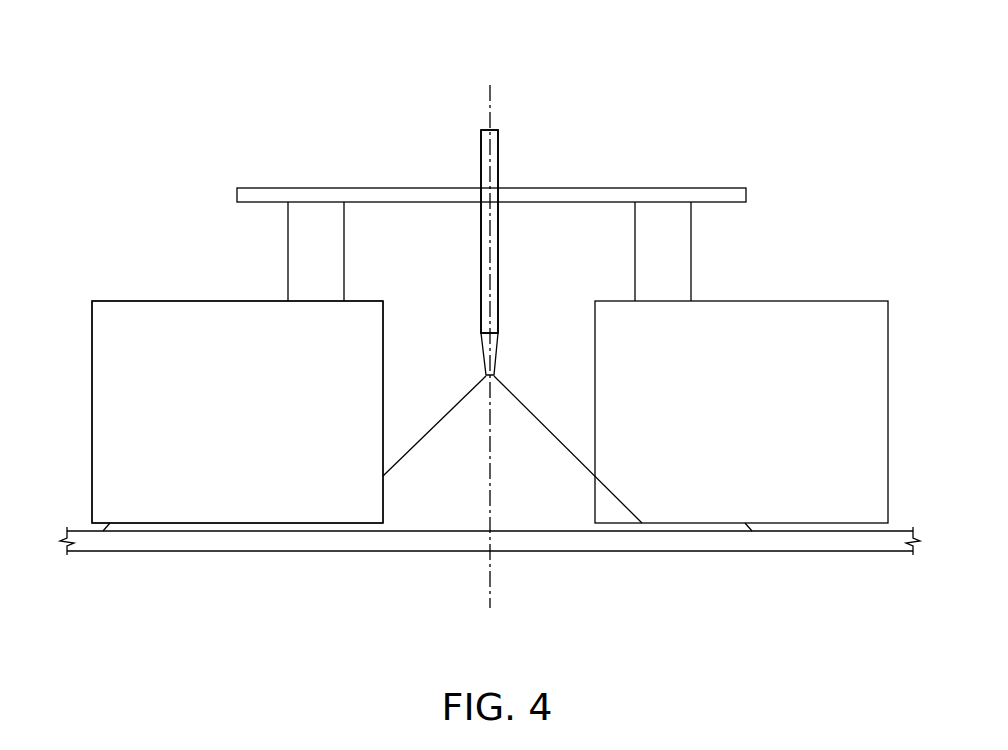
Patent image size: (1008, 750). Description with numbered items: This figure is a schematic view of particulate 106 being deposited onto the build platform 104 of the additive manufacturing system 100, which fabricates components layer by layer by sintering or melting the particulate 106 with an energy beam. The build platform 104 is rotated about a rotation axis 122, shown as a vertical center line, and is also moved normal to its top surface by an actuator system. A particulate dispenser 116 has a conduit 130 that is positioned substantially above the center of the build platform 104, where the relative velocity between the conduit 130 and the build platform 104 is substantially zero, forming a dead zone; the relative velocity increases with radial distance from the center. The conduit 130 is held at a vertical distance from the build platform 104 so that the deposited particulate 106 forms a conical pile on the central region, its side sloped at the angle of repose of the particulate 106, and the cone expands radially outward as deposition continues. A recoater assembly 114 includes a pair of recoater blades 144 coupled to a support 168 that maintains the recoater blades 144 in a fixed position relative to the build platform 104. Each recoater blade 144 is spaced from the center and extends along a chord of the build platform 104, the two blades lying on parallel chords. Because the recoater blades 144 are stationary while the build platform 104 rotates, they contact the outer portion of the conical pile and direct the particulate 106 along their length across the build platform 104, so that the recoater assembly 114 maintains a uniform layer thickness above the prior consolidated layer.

The additive manufacturing system 100 is at (153, 77).
The build platform 104 is at (397, 553).
The particulate 106 is at (547, 421).
The recoater assembly 114 is at (120, 292).
The particulate dispenser 116 is at (497, 130).
The rotation axis 122 is at (488, 238).
The conduit 130 is at (480, 158).
The recoater blade 144 is at (100, 406).
The support 168 is at (581, 198).